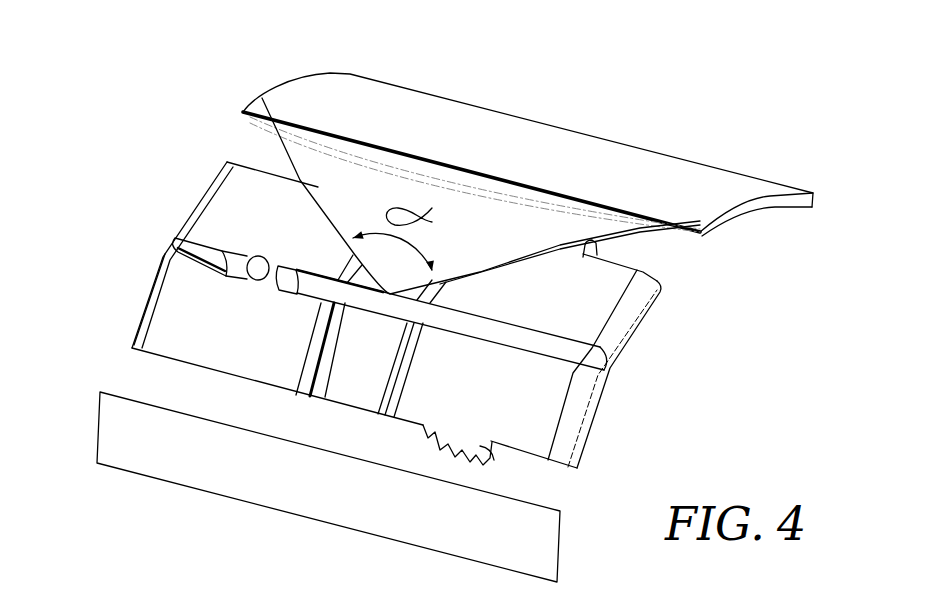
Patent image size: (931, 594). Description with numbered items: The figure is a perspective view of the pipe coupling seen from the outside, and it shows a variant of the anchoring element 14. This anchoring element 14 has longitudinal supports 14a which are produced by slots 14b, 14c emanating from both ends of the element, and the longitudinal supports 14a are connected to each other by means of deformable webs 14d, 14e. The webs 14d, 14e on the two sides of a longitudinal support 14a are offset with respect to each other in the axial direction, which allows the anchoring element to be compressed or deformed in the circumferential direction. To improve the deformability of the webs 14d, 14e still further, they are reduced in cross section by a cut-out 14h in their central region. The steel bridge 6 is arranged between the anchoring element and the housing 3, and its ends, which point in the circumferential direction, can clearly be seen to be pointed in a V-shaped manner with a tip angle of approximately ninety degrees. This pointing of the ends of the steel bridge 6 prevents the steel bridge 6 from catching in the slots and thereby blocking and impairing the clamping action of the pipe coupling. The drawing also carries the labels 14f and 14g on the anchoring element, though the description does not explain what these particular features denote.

The housing 3 is at (688, 188).
The steel bridge 6 is at (513, 220).
The anchoring element 14 is at (637, 339).
The longitudinal support 14a is at (567, 287).
The slot 14b is at (607, 370).
The slot 14c is at (196, 268).
The deformable web 14d is at (252, 257).
The deformable web 14e is at (478, 452).
The support bar 14f is at (375, 300).
The clip 14g is at (196, 253).
The cut-out 14h is at (263, 256).